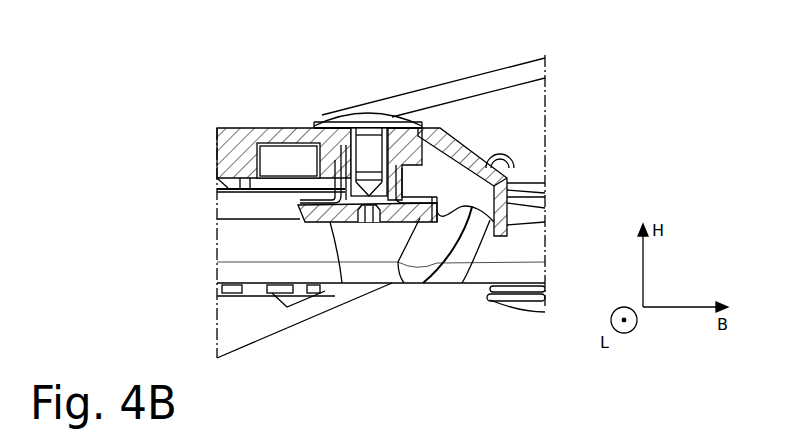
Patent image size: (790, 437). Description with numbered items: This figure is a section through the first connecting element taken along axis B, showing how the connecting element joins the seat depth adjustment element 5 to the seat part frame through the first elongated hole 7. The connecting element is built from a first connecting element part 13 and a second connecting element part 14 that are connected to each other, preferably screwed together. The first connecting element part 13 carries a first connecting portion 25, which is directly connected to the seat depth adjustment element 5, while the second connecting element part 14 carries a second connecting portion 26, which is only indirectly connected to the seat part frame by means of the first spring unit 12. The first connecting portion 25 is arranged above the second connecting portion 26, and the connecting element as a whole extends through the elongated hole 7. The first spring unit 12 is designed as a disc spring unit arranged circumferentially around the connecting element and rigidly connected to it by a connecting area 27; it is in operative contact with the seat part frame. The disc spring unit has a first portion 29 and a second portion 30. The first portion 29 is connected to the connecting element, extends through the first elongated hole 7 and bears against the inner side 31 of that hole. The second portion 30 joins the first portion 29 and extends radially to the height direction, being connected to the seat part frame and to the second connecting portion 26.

The seat depth adjustment element 5 is at (235, 128).
The first elongated hole 7 is at (280, 145).
The inner side of the first elongated hole 31 is at (312, 148).
The first spring unit 12 is at (430, 165).
The first connecting element part 13 is at (370, 150).
The second connecting element part 14 is at (420, 215).
The first connecting portion 25 is at (388, 114).
The second connecting portion 26 is at (325, 215).
The connecting area 27 is at (400, 185).
The first portion of the disc spring unit 29 is at (338, 140).
The second portion of the disc spring unit 30 is at (338, 199).